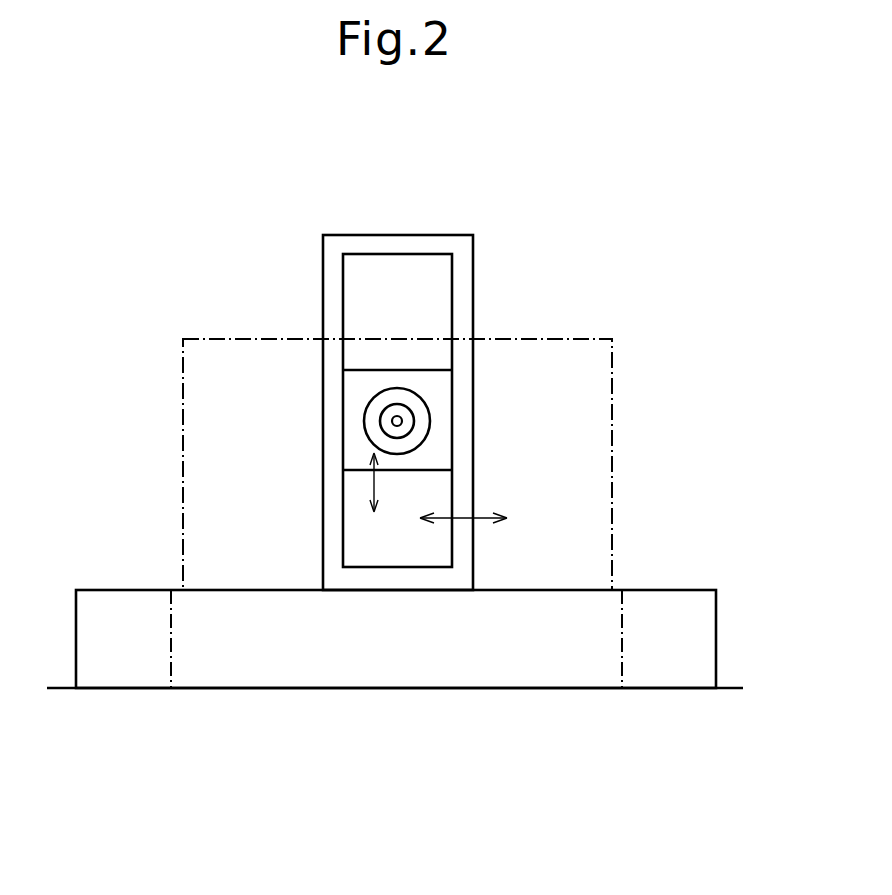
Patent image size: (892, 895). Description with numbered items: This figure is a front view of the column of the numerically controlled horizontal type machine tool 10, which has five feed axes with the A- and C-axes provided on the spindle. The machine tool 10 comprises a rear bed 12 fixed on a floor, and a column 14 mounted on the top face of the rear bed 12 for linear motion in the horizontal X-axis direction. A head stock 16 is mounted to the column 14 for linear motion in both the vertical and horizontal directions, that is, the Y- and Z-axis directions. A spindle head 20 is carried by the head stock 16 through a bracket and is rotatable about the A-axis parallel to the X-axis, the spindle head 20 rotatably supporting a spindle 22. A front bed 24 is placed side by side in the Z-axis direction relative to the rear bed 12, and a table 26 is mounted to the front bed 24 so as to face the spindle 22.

The horizontal type machine tool 10 is at (600, 170).
The rear bed 12 is at (695, 645).
The column 14 is at (462, 573).
The head stock 16 is at (355, 453).
The spindle head 20 is at (368, 418).
The spindle 22 is at (397, 432).
The front bed 24 is at (622, 672).
The table 26 is at (612, 533).